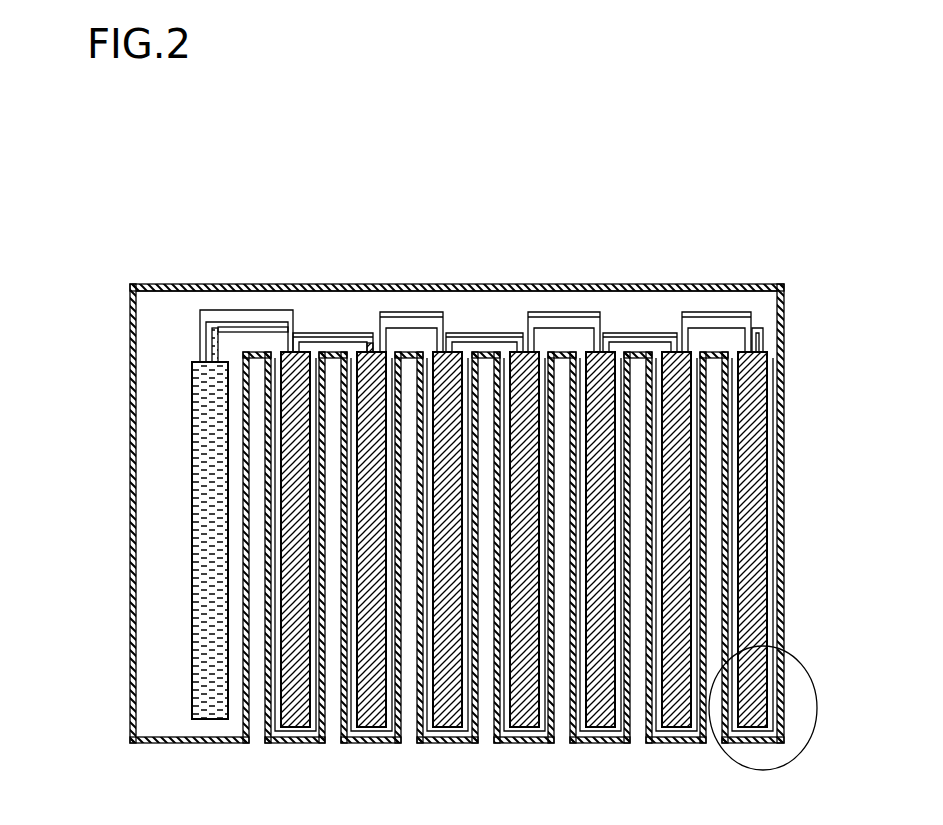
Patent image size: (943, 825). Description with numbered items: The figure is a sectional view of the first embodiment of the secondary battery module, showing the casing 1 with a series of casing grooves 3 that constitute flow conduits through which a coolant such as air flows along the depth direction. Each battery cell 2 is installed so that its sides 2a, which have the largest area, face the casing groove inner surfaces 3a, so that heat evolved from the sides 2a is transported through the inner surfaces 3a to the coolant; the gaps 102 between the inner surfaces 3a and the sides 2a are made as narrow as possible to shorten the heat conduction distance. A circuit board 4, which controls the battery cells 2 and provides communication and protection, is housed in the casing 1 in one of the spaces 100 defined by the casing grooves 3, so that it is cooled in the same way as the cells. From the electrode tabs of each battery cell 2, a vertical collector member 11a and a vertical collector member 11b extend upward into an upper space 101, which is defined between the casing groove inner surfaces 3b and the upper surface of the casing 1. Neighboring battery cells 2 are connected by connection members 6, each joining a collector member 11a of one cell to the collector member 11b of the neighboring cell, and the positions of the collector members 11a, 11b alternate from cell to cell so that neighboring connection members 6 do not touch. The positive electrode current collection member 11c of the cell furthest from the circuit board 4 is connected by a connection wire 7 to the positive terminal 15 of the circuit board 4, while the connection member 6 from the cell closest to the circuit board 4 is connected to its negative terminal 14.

The casing 1 is at (760, 286).
The upper space 101 is at (636, 306).
The casing groove 3 is at (562, 712).
The casing groove inner surface 3a is at (268, 494).
The casing groove inner surface 3b is at (267, 352).
The battery cell 2 is at (377, 712).
The battery cell side 2a is at (281, 530).
The space 100 is at (277, 708).
The gap 102 is at (276, 606).
The circuit board 4 is at (207, 710).
The positive terminal 15 is at (212, 347).
The negative terminal 14 is at (200, 318).
The connection member 6 is at (334, 333).
The connection wire 7 is at (371, 343).
The collector member 11a is at (455, 343).
The collector member 11b is at (687, 343).
The positive electrode current collection member 11c is at (764, 340).